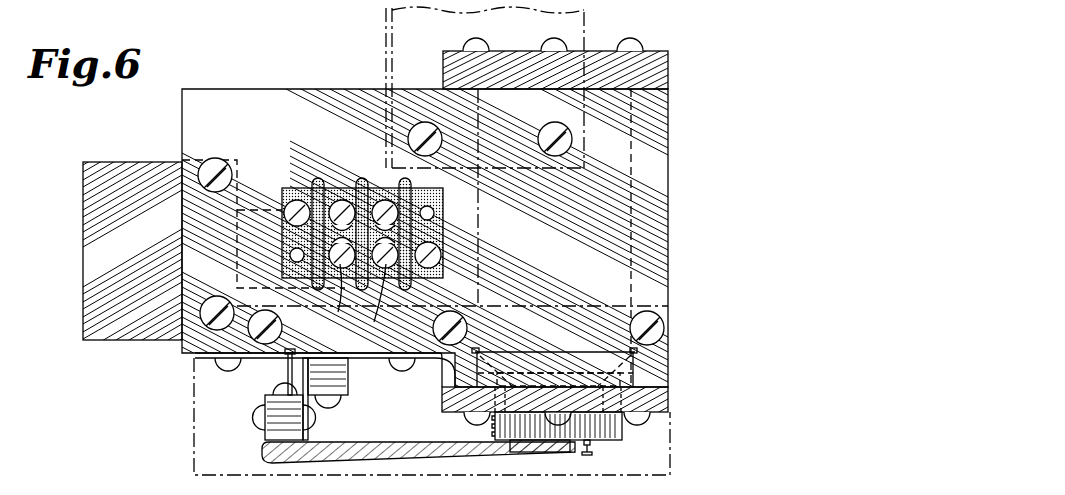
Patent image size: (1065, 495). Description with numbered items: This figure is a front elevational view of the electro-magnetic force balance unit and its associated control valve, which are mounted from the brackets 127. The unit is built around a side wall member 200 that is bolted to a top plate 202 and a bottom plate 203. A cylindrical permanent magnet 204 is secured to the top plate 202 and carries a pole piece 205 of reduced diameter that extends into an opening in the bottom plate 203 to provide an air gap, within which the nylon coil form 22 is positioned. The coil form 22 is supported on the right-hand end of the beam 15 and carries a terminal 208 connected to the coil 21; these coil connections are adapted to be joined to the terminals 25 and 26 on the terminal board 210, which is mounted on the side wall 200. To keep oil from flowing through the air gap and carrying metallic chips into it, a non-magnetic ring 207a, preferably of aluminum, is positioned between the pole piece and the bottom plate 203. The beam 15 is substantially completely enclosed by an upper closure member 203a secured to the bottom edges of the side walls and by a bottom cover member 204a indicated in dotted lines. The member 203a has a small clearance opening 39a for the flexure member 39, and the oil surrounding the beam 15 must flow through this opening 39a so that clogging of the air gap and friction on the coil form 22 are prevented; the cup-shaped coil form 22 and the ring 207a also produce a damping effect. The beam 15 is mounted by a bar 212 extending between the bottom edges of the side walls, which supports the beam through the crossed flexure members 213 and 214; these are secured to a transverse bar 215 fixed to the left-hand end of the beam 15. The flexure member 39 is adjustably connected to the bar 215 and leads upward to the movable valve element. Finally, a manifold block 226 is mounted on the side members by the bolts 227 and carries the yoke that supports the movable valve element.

The side wall member 200 is at (262, 98).
The top plate 202 is at (655, 72).
The cylindrical permanent magnet 204 is at (640, 185).
The brackets 127 is at (589, 20).
The bolts 227 is at (208, 165).
The terminal board 210 is at (443, 229).
The terminal 25 is at (336, 299).
The terminal 26 is at (387, 299).
The manifold block 226 is at (126, 336).
The upper closure member 203a is at (445, 380).
The bottom plate 203 is at (655, 402).
The pole piece 205 is at (625, 372).
The non-magnetic ring 207a is at (666, 376).
The coil 21 is at (622, 438).
The coil form 22 is at (616, 441).
The terminal 208 is at (591, 454).
The beam 15 is at (381, 442).
The flexure member 39 is at (288, 373).
The clearance opening 39a is at (292, 350).
The bar 212 is at (332, 389).
The crossed flexure member 213 is at (337, 400).
The crossed flexure member 214 is at (310, 408).
The transverse bar 215 is at (268, 413).
The bottom cover member 204a is at (650, 475).